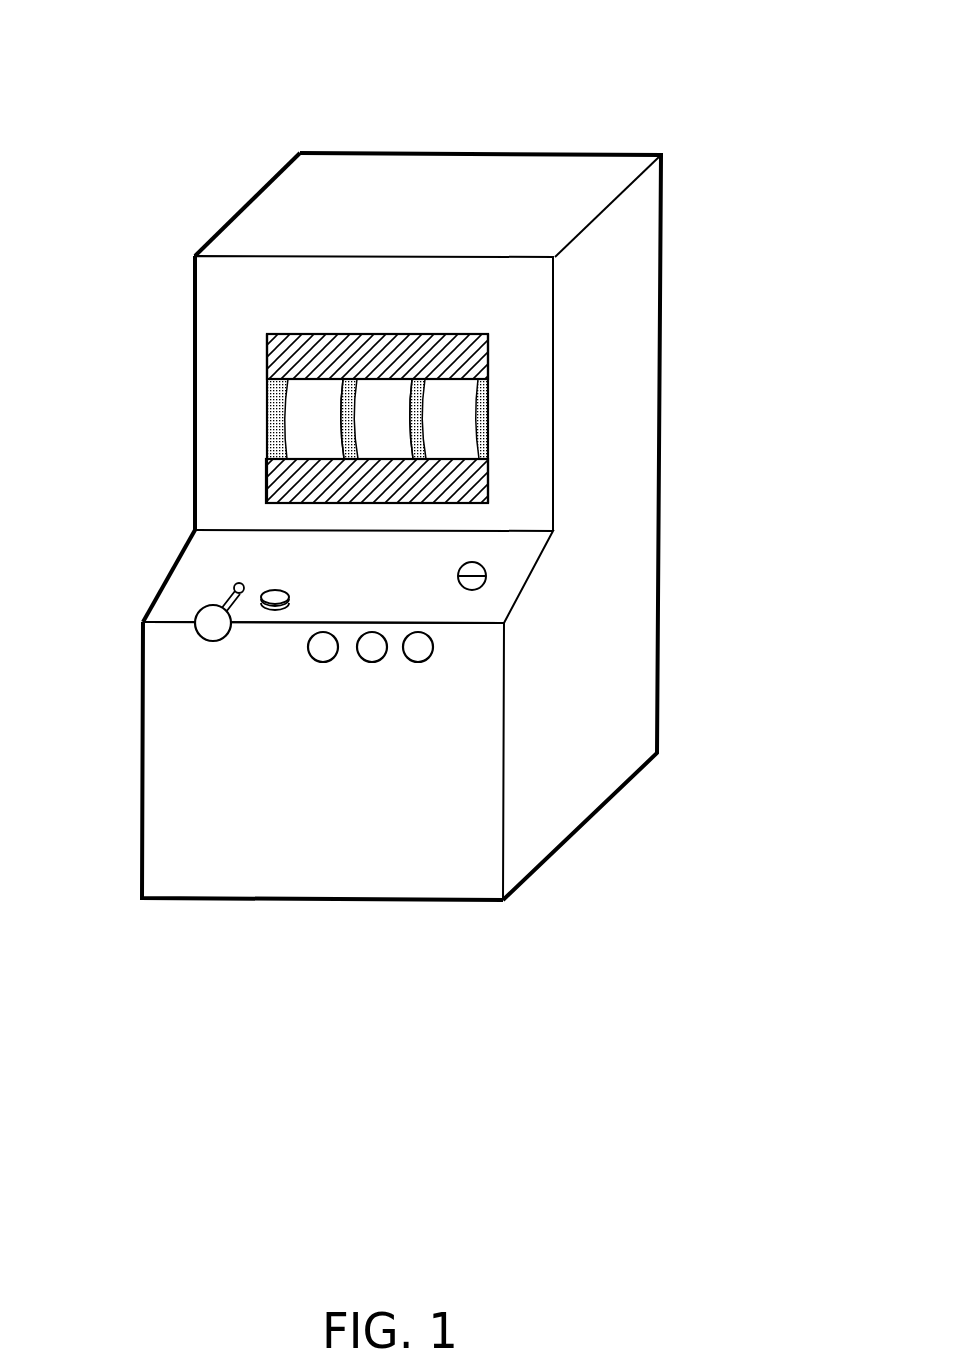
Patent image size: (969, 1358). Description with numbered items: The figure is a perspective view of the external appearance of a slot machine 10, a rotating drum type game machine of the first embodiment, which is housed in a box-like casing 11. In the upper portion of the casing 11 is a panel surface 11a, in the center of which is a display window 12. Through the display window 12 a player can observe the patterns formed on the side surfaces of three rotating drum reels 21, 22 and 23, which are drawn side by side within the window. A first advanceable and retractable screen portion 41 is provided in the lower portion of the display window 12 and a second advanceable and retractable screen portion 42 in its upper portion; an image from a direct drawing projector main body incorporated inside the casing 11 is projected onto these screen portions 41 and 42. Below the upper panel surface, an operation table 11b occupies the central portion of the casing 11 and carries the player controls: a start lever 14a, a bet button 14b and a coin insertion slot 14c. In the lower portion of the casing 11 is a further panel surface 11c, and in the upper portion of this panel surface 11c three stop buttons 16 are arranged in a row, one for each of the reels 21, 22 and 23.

The slot machine 10 is at (770, 38).
The casing 11 is at (660, 397).
The panel surface 11a is at (208, 302).
The operation table 11b is at (187, 572).
The panel surface 11c is at (155, 757).
The display window 12 is at (268, 447).
The rotating drum reel 21 is at (290, 425).
The rotating drum reel 22 is at (383, 408).
The rotating drum reel 23 is at (455, 440).
The first advanceable and retractable screen portion 41 is at (480, 490).
The second advanceable and retractable screen portion 42 is at (478, 362).
The start lever 14a is at (195, 613).
The bet button 14b is at (290, 595).
The coin insertion slot 14c is at (486, 572).
The stop buttons 16 is at (410, 712).